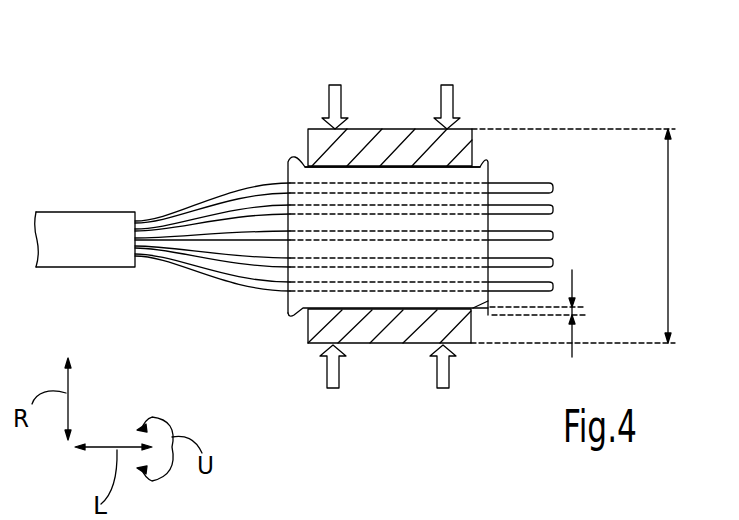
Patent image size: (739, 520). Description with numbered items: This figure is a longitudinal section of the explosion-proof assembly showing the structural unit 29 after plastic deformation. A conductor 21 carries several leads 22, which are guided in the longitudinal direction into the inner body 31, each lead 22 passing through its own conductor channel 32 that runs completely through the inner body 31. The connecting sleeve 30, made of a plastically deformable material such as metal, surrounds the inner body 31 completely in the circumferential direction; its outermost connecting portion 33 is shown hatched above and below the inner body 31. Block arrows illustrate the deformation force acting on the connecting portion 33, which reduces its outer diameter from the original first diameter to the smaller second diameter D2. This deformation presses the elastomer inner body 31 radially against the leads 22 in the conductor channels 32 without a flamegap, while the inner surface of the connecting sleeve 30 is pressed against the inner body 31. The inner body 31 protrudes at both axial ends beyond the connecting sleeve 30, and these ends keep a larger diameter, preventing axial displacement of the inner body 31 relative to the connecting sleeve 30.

The conductor 21 is at (61, 276).
The lead 22 is at (232, 227).
The structural unit 29 is at (294, 326).
The connecting sleeve 30 is at (315, 146).
The inner body 31 is at (404, 176).
The conductor channel 32 is at (462, 182).
The connecting portion 33 is at (462, 395).
The second diameter D2 is at (669, 213).